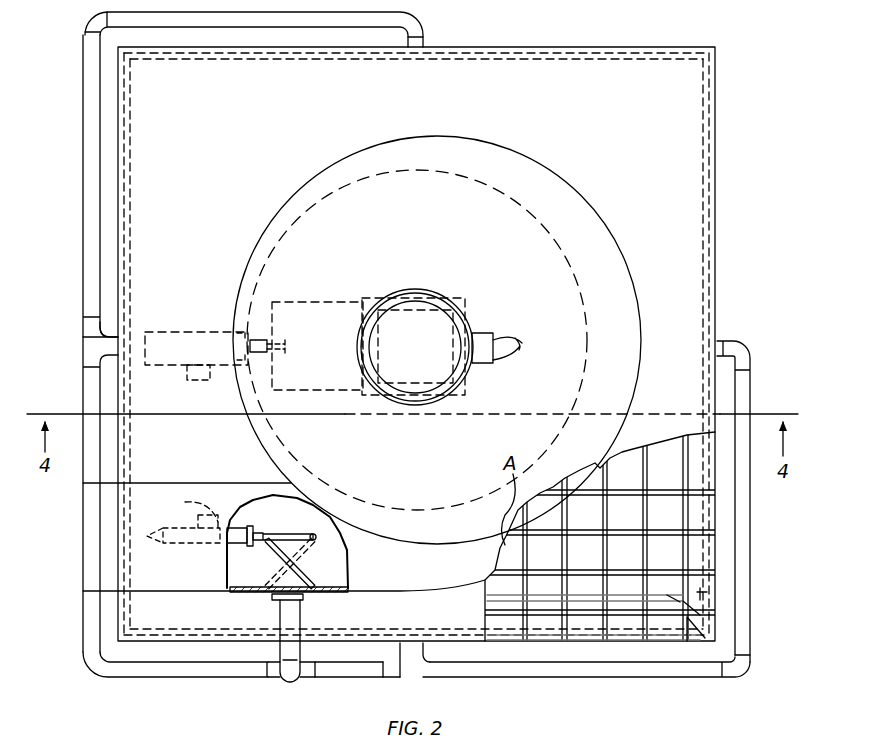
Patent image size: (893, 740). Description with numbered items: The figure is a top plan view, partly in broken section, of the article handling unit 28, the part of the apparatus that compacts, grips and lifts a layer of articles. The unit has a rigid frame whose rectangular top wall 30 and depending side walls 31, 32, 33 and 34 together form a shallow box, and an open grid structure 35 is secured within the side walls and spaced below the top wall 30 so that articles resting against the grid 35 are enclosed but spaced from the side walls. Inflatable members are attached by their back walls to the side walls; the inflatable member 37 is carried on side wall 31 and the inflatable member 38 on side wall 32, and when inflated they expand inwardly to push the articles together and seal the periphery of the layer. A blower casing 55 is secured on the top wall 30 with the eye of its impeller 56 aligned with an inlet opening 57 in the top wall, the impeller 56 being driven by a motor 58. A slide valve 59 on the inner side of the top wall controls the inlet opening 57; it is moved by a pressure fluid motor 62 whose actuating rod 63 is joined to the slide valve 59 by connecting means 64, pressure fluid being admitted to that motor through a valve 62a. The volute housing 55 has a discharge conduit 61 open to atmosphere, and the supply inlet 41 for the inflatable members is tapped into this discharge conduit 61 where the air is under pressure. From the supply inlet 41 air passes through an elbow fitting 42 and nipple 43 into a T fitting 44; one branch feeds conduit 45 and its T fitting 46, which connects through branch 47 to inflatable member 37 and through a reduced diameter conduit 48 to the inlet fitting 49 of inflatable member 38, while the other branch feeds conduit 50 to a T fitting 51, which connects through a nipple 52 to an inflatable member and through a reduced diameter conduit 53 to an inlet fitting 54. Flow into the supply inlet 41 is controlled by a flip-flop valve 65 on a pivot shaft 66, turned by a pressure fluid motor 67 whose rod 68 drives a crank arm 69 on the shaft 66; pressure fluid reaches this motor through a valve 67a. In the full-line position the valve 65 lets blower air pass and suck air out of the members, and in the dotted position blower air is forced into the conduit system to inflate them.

The article handling unit 28 is at (727, 80).
The top wall 30 is at (604, 138).
The side wall 31 is at (500, 652).
The side wall 32 is at (717, 220).
The side wall 33 is at (565, 47).
The side wall 34 is at (118, 182).
The open grid structure 35 is at (660, 535).
The inflatable member 37 is at (583, 648).
The inflatable member 38 is at (705, 592).
The supply inlet 41 is at (304, 620).
The elbow fitting 42 is at (283, 650).
The nipple 43 is at (322, 660).
The T fitting 44 is at (275, 680).
The conduit 45 is at (363, 676).
The T fitting 46 is at (427, 680).
The branch 47 is at (423, 656).
The reduced diameter conduit 48 is at (640, 673).
The inlet fitting 49 is at (745, 345).
The conduit 50 is at (90, 640).
The T fitting 51 is at (83, 338).
The nipple 52 is at (118, 332).
The reduced diameter conduit 53 is at (83, 50).
The inlet fitting 54 is at (423, 37).
The blower casing 55 is at (478, 137).
The impeller 56 is at (626, 312).
The inlet opening 57 is at (448, 312).
The motor 58 is at (498, 340).
The slide valve 59 is at (325, 303).
The discharge conduit 61 is at (200, 483).
The pressure fluid motor 62 is at (196, 335).
The valve 62a is at (190, 380).
The actuating rod 63 is at (268, 304).
The connecting means 64 is at (292, 348).
The flip-flop valve 65 is at (318, 572).
The pivot shaft 66 is at (268, 562).
The pressure fluid motor 67 is at (210, 547).
The valve 67a is at (192, 505).
The rod 68 is at (287, 533).
The crank arm 69 is at (318, 538).